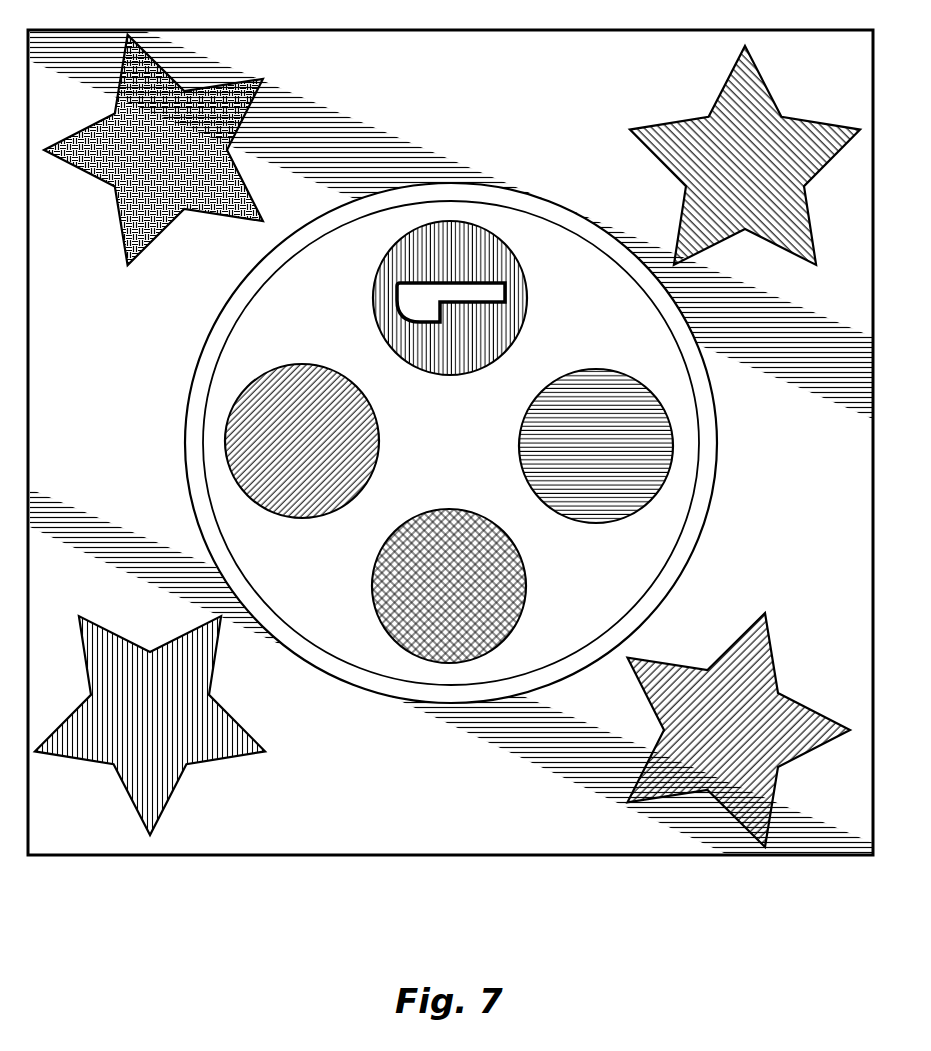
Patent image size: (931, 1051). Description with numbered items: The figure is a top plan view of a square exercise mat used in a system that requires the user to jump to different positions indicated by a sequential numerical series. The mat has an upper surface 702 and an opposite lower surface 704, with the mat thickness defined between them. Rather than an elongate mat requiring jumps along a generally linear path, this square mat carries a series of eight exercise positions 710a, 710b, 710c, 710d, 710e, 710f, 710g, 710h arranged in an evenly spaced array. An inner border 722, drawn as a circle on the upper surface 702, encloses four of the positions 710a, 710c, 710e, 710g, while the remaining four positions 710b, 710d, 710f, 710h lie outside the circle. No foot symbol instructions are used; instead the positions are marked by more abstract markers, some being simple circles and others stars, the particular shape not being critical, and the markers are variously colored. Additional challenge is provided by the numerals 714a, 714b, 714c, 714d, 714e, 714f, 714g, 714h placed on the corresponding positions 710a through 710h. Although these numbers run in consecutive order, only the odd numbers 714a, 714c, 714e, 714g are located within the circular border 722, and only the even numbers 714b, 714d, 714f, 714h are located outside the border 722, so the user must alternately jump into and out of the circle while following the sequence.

The upper surface 702 is at (348, 818).
The lower surface 704 is at (565, 832).
The inner border 722 is at (186, 455).
The exercise position 710a is at (373, 297).
The exercise position 710b is at (117, 223).
The exercise position 710c is at (300, 520).
The exercise position 710d is at (203, 750).
The exercise position 710e is at (527, 587).
The exercise position 710f is at (773, 657).
The exercise position 710g is at (597, 370).
The exercise position 710h is at (677, 215).
The numeral 714a is at (448, 287).
The numeral 714b is at (203, 132).
The numeral 714c is at (267, 428).
The numeral 714d is at (137, 762).
The numeral 714e is at (443, 605).
The numeral 714f is at (733, 703).
The numeral 714g is at (605, 442).
The numeral 714h is at (740, 117).